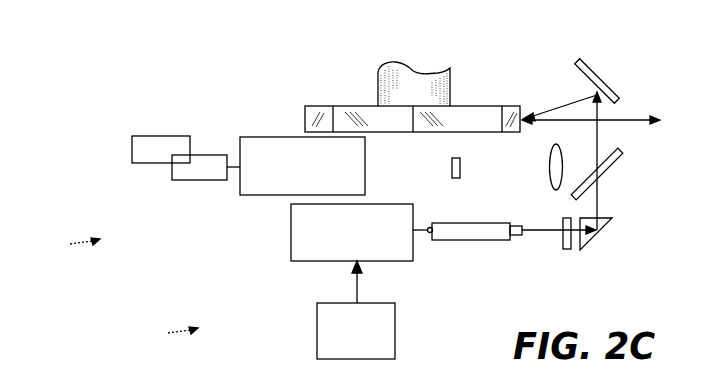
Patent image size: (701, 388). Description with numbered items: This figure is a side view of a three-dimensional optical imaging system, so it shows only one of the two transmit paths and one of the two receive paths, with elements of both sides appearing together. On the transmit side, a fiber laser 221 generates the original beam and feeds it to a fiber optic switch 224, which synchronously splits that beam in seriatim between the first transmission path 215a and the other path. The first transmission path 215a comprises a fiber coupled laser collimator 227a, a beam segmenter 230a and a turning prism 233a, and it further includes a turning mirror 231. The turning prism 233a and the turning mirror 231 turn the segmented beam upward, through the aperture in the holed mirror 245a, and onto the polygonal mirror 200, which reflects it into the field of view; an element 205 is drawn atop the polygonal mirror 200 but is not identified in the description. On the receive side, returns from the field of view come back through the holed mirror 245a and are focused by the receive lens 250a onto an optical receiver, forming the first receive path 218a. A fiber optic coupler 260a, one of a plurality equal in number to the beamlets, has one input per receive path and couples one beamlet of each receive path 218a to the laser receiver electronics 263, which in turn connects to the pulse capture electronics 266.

The polygonal mirror 200 is at (305, 106).
The tissue sample 205 is at (373, 66).
The turning mirror 231 is at (572, 63).
The holed mirror 245a is at (622, 151).
The receive lens 250a is at (552, 188).
The turning prism 233a is at (613, 218).
The beam segmenter 230a is at (572, 250).
The fiber coupled laser collimator 227a is at (485, 243).
The fiber optic switch 224 is at (291, 261).
The fiber laser 221 is at (395, 303).
The fiber optic coupler 260a is at (240, 195).
The laser receiver electronics 263 is at (172, 180).
The pulse capture electronics 266 is at (132, 163).
The first receive path 218a is at (63, 244).
The first transmission path 215a is at (161, 332).